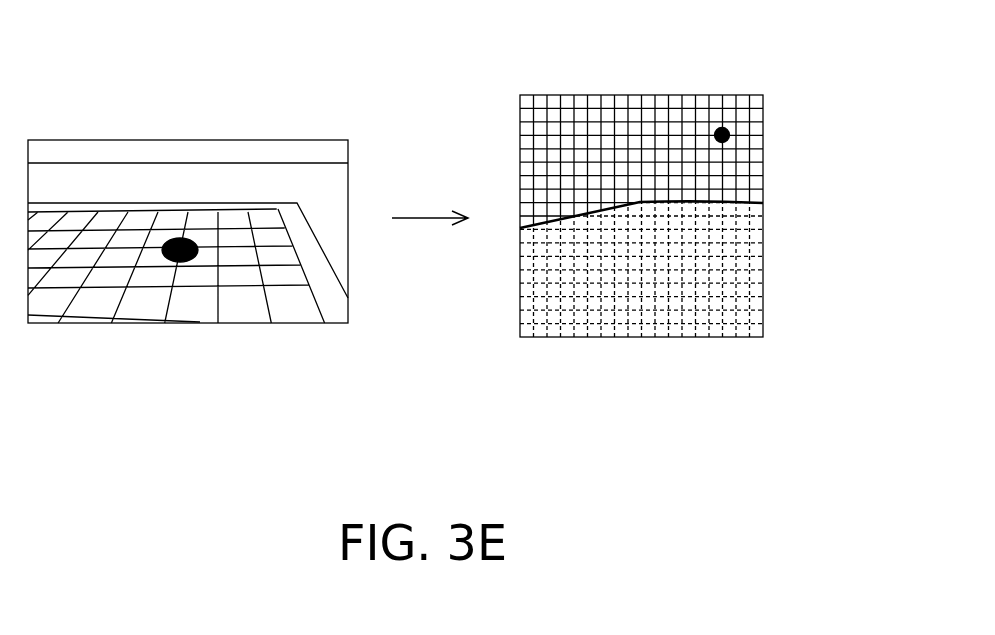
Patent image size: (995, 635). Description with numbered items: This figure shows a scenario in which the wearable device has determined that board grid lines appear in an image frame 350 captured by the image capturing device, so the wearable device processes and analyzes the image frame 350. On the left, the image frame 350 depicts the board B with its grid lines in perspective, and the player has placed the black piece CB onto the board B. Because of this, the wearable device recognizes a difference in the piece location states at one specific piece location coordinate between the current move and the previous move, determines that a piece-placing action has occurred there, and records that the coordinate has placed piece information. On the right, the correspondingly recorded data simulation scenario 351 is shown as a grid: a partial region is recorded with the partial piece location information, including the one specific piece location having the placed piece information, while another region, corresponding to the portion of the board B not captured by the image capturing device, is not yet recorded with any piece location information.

The image frame 350 is at (187, 140).
The data simulation scenario 351 is at (695, 176).
The black piece CB is at (167, 257).
The board B is at (253, 310).